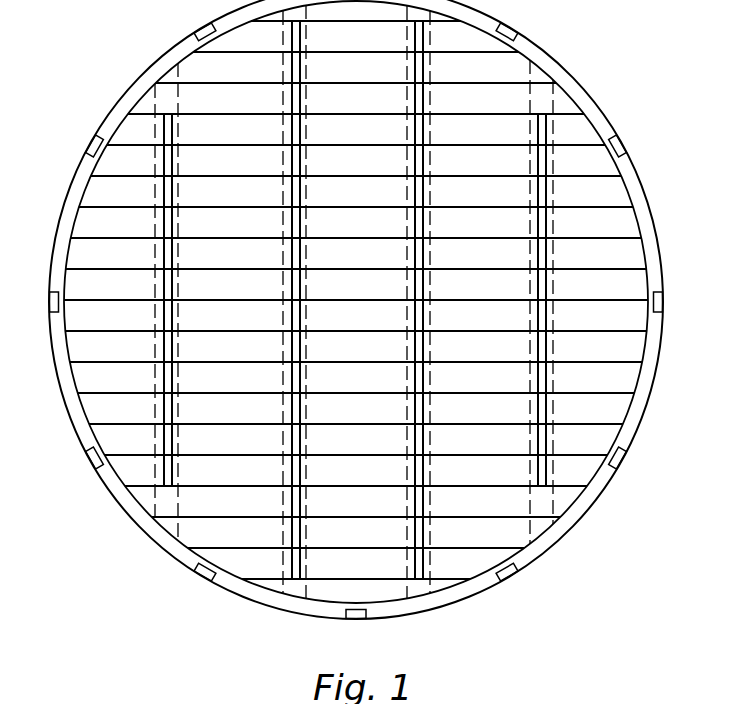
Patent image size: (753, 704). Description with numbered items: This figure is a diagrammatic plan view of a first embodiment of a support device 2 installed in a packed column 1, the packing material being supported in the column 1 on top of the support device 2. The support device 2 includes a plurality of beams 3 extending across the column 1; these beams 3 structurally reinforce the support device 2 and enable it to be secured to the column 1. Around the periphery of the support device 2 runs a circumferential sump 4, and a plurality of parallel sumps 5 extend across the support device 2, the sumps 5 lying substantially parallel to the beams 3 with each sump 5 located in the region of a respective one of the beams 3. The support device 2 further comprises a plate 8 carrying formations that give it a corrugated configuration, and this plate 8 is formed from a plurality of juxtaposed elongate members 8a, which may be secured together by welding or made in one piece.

The packed column 1 is at (584, 79).
The support device 2 is at (634, 419).
The beams 3 is at (174, 163).
The circumferential sump 4 is at (652, 217).
The parallel sumps 5 is at (172, 503).
The plate 8 is at (580, 499).
The elongate members 8a is at (356, 319).